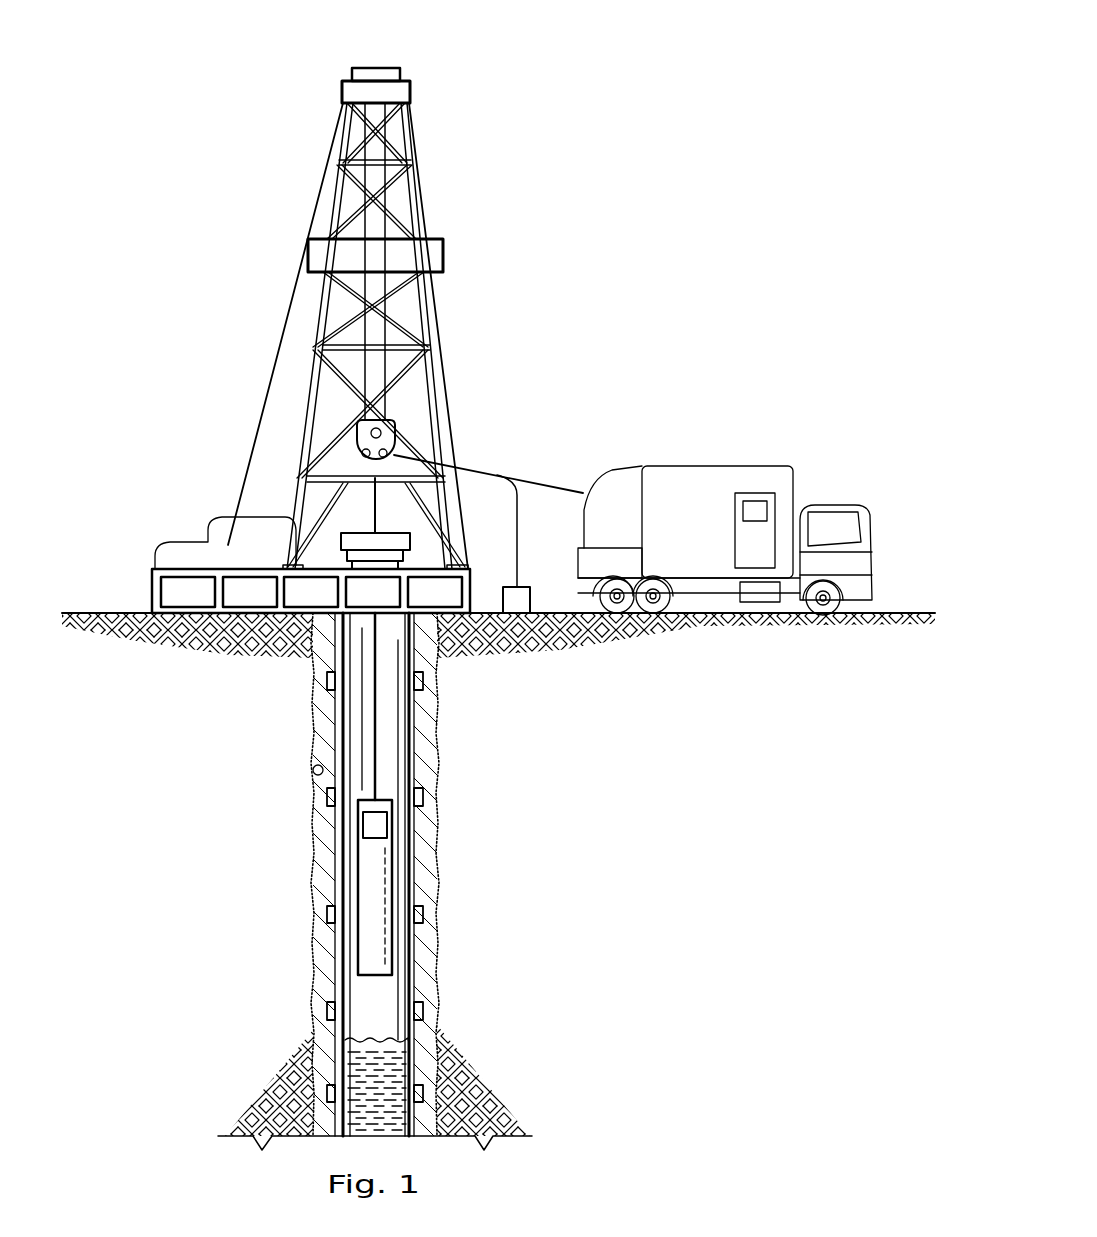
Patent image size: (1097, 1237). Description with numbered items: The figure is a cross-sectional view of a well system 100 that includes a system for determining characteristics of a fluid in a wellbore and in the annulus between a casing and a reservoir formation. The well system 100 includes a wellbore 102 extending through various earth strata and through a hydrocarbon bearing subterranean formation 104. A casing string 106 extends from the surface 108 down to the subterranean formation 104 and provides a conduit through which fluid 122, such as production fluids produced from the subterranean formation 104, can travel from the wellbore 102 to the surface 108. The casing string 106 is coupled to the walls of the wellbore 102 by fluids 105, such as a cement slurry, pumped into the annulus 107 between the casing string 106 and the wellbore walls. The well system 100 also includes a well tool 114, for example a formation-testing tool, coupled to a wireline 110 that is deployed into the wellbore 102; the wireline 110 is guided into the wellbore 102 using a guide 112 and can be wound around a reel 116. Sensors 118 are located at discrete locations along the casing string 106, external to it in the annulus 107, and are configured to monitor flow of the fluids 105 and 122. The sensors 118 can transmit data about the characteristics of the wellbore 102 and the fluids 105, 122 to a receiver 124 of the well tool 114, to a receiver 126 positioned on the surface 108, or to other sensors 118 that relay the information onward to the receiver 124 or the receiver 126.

The well system 100 is at (740, 132).
The wellbore 102 is at (440, 872).
The subterranean formation 104 is at (462, 766).
The fluids 105 is at (325, 853).
The casing string 106 is at (338, 713).
The annulus 107 is at (313, 762).
The surface 108 is at (905, 612).
The wireline 110 is at (498, 472).
The guide 112 is at (357, 445).
The well tool 114 is at (358, 883).
The reel 116 is at (628, 468).
The sensors 118 is at (424, 682).
The fluid 122 is at (382, 1045).
The receiver 124 is at (378, 827).
The receiver 126 is at (531, 598).